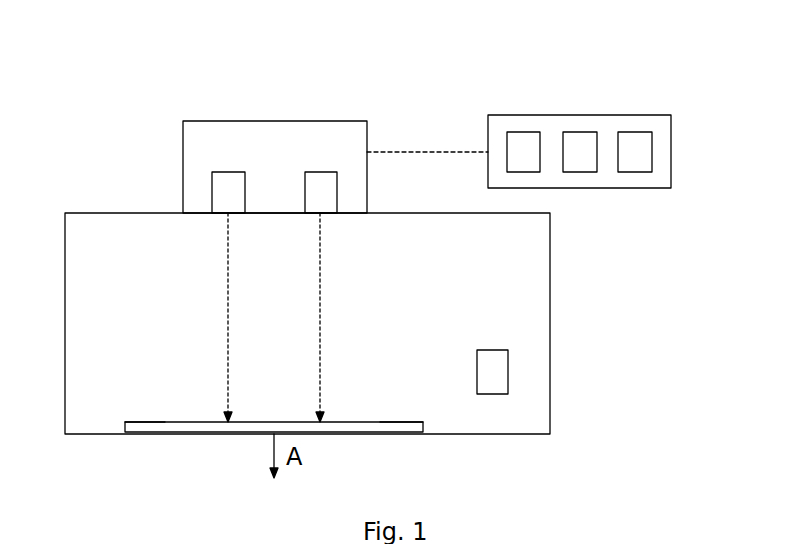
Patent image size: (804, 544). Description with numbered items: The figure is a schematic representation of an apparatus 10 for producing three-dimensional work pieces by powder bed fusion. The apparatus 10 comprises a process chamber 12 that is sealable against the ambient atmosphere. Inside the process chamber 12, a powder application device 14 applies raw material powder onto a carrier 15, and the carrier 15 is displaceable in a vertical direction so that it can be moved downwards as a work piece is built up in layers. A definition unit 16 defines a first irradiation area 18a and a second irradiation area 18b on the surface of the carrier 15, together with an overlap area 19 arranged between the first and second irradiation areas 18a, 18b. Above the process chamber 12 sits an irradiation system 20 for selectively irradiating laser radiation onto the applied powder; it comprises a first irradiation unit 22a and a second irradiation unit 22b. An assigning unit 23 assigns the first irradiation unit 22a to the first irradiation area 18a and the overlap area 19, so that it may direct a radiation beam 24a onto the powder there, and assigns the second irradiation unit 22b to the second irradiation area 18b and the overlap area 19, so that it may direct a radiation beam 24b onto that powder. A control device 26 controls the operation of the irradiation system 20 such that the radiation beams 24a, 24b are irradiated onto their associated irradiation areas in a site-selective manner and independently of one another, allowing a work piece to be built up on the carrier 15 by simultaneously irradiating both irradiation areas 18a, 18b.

The apparatus 10 is at (582, 440).
The process chamber 12 is at (522, 427).
The powder application device 14 is at (490, 370).
The carrier 15 is at (371, 414).
The definition unit 16 is at (530, 167).
The first irradiation area 18a is at (160, 421).
The second irradiation area 18b is at (398, 420).
The overlap area 19 is at (285, 421).
The irradiation system 20 is at (337, 130).
The first irradiation unit 22a is at (220, 172).
The second irradiation unit 22b is at (315, 172).
The assigning unit 23 is at (583, 167).
The first radiation beam 24a is at (228, 350).
The second radiation beam 24b is at (320, 350).
The control device 26 is at (636, 167).